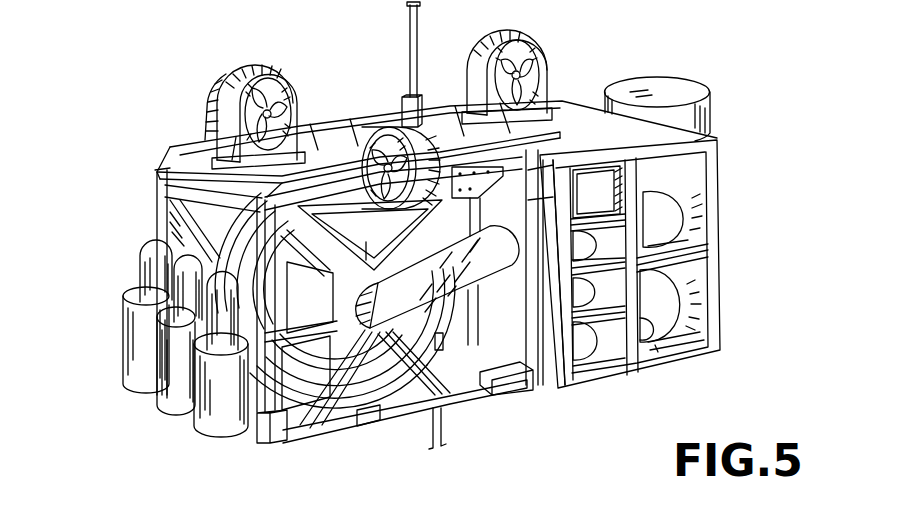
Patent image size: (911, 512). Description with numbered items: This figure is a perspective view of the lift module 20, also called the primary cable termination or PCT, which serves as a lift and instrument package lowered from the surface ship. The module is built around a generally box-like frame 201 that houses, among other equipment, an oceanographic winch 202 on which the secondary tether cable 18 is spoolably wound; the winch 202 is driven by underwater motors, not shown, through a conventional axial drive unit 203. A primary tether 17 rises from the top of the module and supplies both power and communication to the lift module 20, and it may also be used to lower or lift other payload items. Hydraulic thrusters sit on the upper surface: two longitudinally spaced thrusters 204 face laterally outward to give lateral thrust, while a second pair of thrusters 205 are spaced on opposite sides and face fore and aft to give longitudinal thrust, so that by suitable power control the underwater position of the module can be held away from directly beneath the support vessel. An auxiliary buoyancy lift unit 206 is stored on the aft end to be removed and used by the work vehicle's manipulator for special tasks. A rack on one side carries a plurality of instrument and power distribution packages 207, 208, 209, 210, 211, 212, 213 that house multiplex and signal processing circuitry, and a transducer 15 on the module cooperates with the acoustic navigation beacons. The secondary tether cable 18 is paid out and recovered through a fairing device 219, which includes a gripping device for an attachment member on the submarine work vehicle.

The transducer 15 is at (122, 334).
The primary tether 17 is at (410, 38).
The secondary tether cable 18 is at (443, 424).
The lift module 20 is at (98, 70).
The frame 201 is at (300, 436).
The oceanographic winch 202 is at (386, 241).
The axial drive unit 203 is at (512, 259).
The hydraulic thrusters 204 is at (258, 69).
The hydraulic thrusters 205 is at (205, 108).
The auxiliary buoyancy lift unit 206 is at (711, 118).
The instrument package 207 is at (697, 178).
The instrument package 208 is at (613, 203).
The instrument package 209 is at (691, 230).
The instrument package 210 is at (677, 310).
The instrument package 211 is at (606, 344).
The instrument package 212 is at (607, 299).
The instrument package 213 is at (607, 250).
The fairing device 219 is at (445, 350).